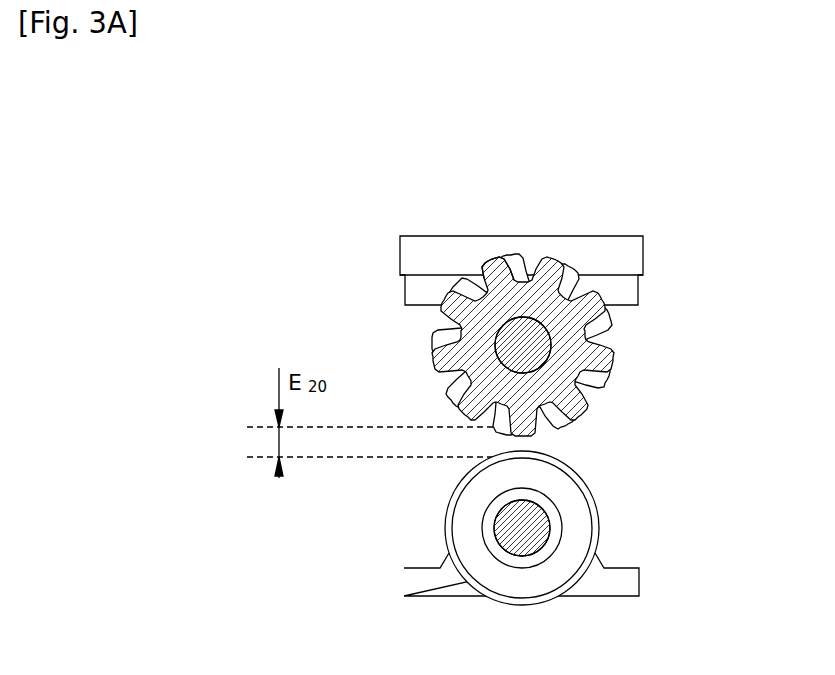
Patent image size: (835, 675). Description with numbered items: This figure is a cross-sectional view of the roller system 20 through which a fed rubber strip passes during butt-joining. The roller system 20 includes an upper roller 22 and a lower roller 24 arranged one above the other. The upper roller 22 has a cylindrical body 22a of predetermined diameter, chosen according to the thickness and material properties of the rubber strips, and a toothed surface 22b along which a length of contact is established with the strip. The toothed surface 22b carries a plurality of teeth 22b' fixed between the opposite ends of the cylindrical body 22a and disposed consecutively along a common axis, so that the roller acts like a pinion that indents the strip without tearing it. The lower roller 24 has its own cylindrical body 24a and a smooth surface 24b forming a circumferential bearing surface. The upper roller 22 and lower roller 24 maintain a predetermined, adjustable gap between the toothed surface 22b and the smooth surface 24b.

The roller system 20 is at (576, 198).
The upper roller 22 is at (506, 292).
The cylindrical body 22a is at (533, 347).
The toothed surface 22b is at (478, 214).
The teeth 22b' is at (579, 344).
The lower roller 24 is at (385, 582).
The cylindrical body 24a is at (533, 533).
The smooth surface 24b is at (590, 490).